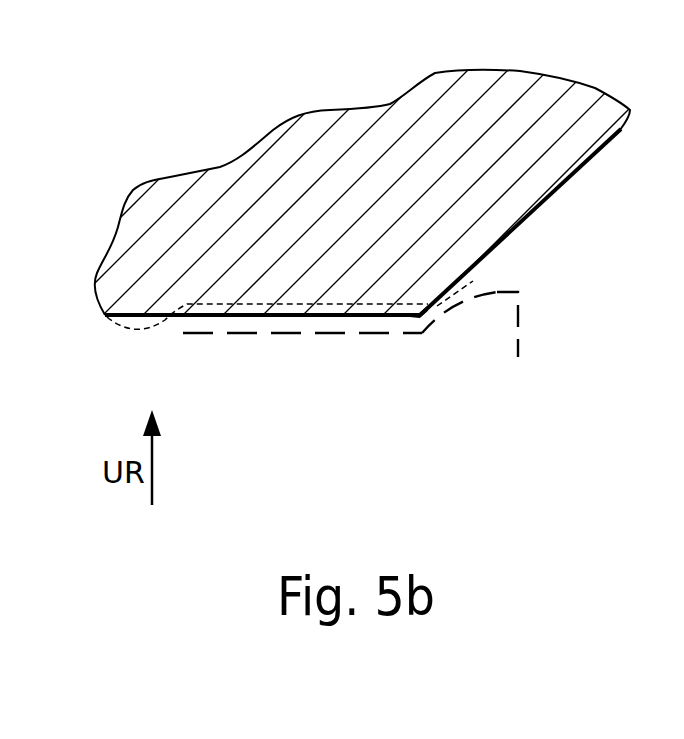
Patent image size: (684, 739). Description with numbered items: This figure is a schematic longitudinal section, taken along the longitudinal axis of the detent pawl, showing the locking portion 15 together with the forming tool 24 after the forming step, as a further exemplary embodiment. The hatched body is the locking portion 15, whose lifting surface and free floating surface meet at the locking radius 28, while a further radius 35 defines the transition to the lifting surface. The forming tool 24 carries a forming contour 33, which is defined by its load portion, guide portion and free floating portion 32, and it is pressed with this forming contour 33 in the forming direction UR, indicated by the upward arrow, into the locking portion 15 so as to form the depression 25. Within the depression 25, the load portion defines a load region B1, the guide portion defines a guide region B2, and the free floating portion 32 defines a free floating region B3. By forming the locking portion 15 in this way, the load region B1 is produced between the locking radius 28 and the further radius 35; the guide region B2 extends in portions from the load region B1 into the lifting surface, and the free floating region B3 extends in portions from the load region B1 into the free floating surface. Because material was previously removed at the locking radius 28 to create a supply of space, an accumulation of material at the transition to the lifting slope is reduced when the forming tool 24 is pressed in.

The locking portion 15 is at (197, 193).
The forming tool 24 is at (537, 335).
The depression 25 is at (370, 309).
The locking radius 28 is at (418, 318).
The free floating portion 32 is at (245, 333).
The forming contour 33 is at (214, 331).
The further radius 35 is at (478, 278).
The load region B1 is at (447, 307).
The guide region B2 is at (483, 307).
The free floating region B3 is at (323, 306).